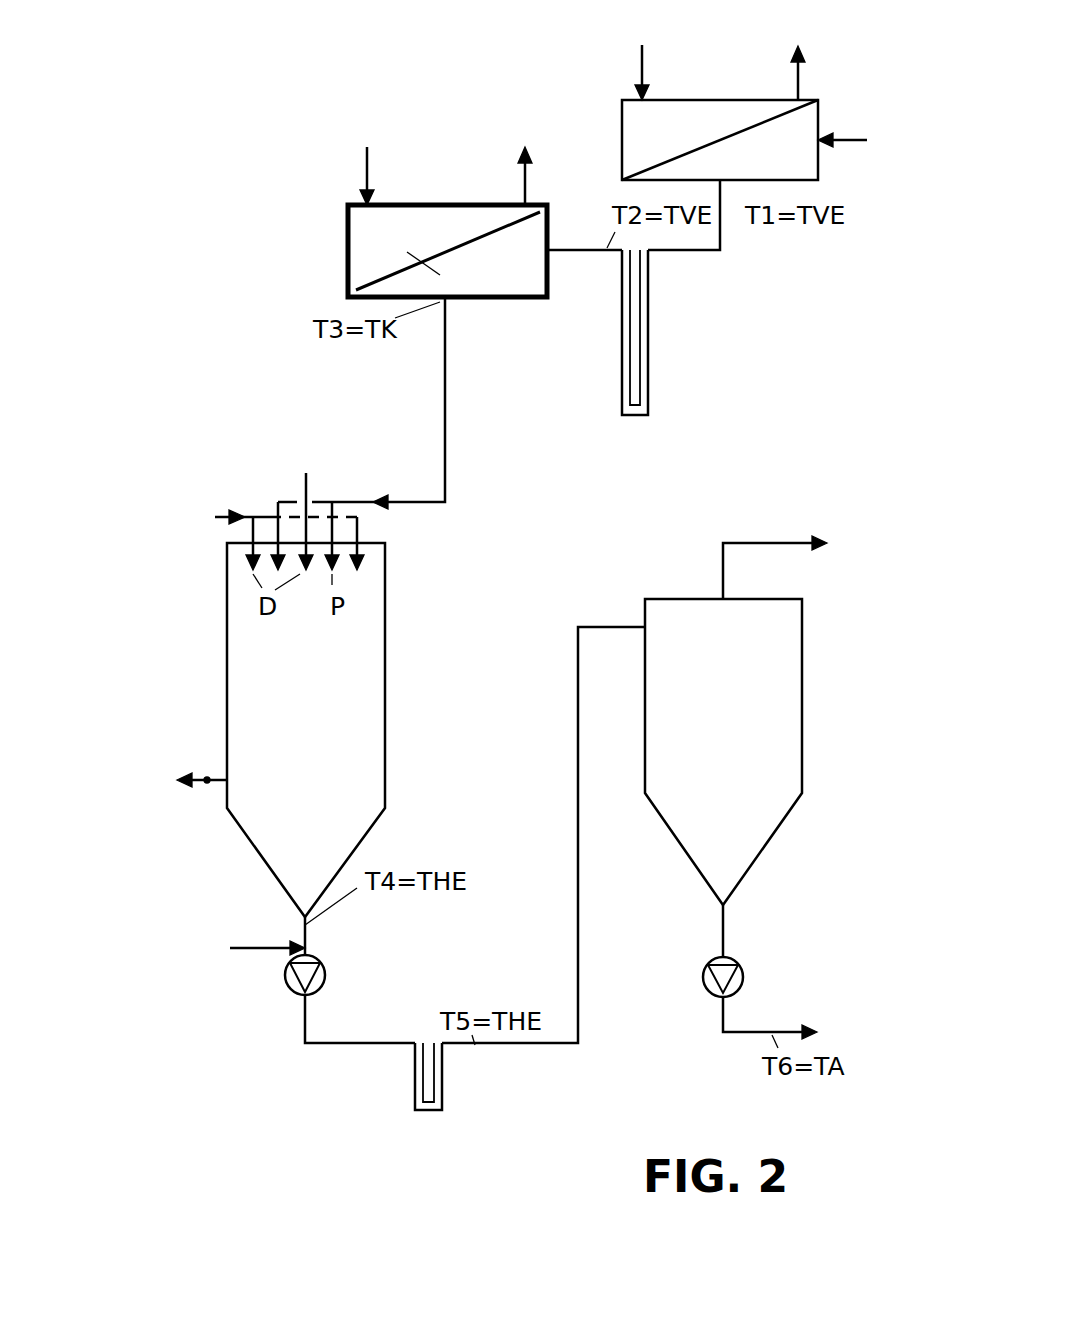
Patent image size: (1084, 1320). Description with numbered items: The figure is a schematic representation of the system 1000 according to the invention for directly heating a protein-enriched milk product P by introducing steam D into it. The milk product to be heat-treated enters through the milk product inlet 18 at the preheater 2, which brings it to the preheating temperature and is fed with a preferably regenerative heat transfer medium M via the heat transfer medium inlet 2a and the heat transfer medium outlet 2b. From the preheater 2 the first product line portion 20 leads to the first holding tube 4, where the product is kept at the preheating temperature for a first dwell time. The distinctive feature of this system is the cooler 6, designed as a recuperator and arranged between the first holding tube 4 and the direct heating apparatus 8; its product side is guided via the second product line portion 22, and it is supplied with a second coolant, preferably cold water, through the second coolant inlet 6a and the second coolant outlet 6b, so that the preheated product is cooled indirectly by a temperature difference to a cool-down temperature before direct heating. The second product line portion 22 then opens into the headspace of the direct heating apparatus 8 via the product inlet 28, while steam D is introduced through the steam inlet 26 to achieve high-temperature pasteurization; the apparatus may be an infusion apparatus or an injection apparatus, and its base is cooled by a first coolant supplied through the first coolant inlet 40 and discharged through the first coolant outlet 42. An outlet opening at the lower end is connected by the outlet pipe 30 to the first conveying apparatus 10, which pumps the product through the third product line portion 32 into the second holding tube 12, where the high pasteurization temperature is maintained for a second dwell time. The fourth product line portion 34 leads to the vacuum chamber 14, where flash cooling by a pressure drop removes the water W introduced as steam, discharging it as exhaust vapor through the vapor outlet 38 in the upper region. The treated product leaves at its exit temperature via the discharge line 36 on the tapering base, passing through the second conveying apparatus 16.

The system 1000 is at (281, 342).
The preheater 2 is at (720, 140).
The heat transfer medium inlet 2a is at (644, 48).
The heat transfer medium outlet 2b is at (797, 81).
The first holding tube 4 is at (645, 352).
The cooler 6 is at (447, 251).
The second coolant inlet 6a is at (368, 152).
The second coolant outlet 6b is at (522, 187).
The direct heating apparatus 8 is at (306, 730).
The first conveying apparatus 10 is at (305, 967).
The second holding tube 12 is at (438, 1070).
The vacuum chamber 14 is at (723, 752).
The second conveying apparatus 16 is at (722, 965).
The milk product inlet 18 is at (848, 136).
The first product line portion 20 is at (721, 235).
The second product line portion 22 is at (572, 255).
The steam inlet 26 is at (303, 487).
The product inlet 28 is at (322, 498).
The outlet pipe 30 is at (305, 938).
The third product line portion 32 is at (340, 1048).
The fourth product line portion 34 is at (578, 955).
The discharge line 36 is at (750, 1030).
The vapor outlet 38 is at (792, 545).
The first coolant inlet 40 is at (267, 950).
The first coolant outlet 42 is at (207, 780).